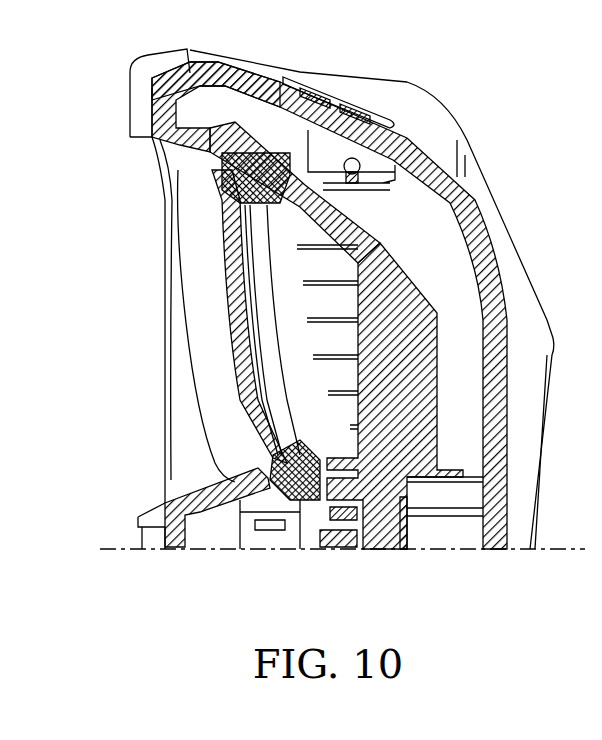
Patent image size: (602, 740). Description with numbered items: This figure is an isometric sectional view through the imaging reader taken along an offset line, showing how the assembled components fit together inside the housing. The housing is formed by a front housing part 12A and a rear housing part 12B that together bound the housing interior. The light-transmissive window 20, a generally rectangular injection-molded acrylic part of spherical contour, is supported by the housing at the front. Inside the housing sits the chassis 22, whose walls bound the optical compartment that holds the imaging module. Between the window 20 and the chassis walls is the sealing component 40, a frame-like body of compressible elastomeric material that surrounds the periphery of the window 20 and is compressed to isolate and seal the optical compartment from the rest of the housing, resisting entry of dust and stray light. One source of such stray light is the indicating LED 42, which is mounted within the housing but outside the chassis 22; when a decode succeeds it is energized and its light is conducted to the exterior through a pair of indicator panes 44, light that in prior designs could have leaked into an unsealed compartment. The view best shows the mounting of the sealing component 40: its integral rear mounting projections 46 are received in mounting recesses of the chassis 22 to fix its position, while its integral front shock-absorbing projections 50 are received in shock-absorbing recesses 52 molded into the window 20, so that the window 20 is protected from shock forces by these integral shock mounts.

The front housing part 12A is at (130, 86).
The rear housing part 12B is at (503, 236).
The light-transmissive window 20 is at (253, 406).
The chassis 22 is at (412, 291).
The sealing component 40 is at (243, 207).
The indicating LED 42 is at (395, 168).
The indicator panes 44 is at (350, 126).
The rear mounting projections 46 is at (288, 138).
The front shock-absorbing projections 50 is at (178, 158).
The shock-absorbing recesses 52 is at (178, 133).